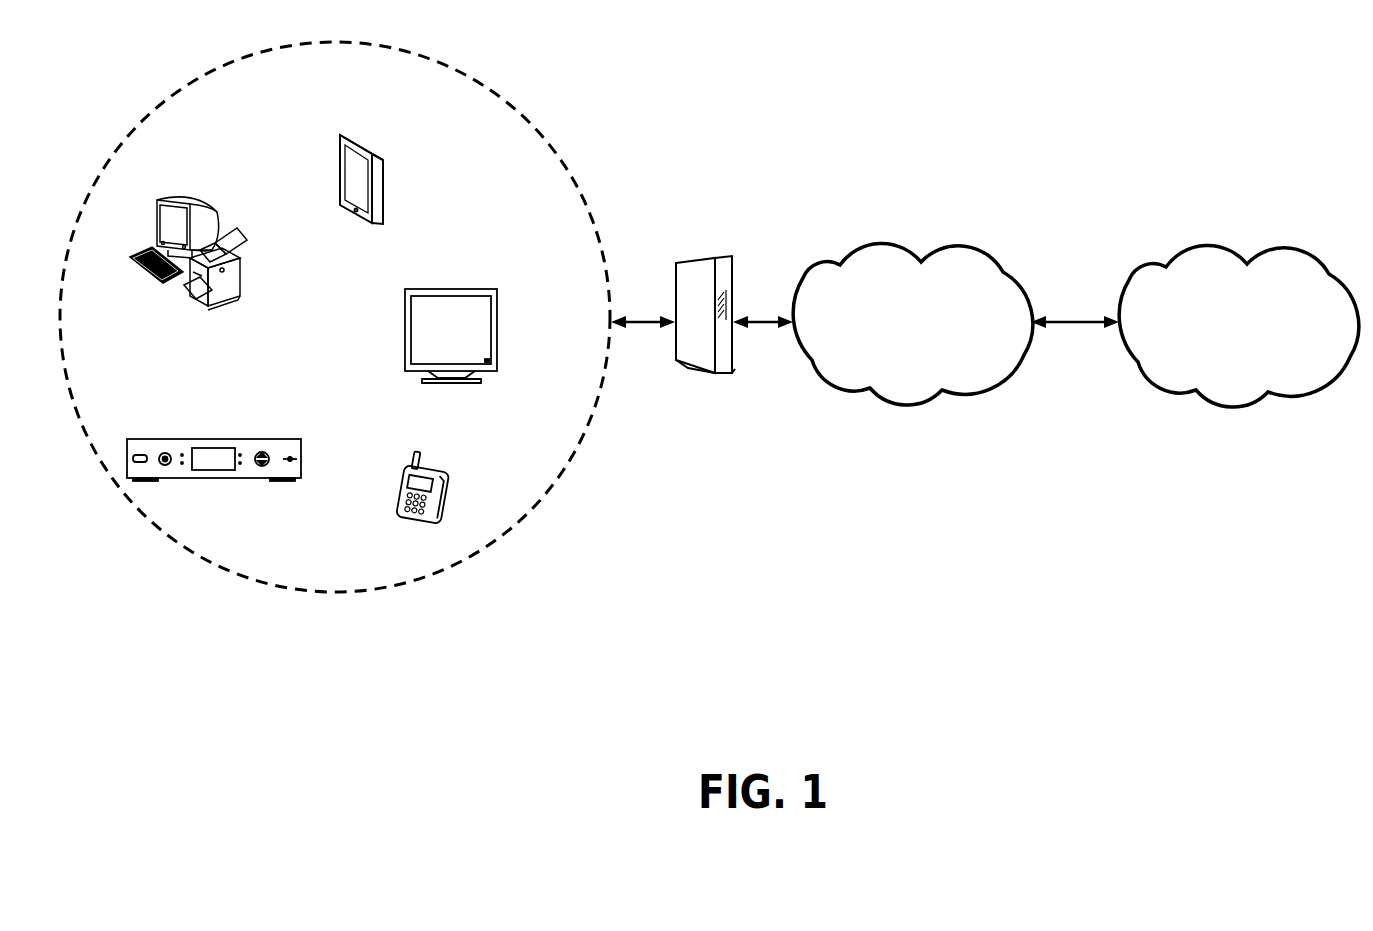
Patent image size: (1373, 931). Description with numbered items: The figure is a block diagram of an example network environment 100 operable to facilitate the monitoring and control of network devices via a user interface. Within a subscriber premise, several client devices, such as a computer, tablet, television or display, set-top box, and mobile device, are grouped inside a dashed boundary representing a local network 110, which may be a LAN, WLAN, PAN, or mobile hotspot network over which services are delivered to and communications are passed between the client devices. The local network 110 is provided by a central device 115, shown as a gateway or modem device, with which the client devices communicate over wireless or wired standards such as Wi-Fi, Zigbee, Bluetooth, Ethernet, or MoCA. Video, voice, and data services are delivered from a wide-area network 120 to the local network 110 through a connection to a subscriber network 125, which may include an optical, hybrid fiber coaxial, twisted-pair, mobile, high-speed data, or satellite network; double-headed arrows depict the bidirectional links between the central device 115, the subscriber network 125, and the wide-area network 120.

The network environment 100 is at (1103, 707).
The local network 110 is at (537, 130).
The central device 115 is at (698, 258).
The wide-area network 120 is at (1237, 410).
The subscriber network 125 is at (906, 407).